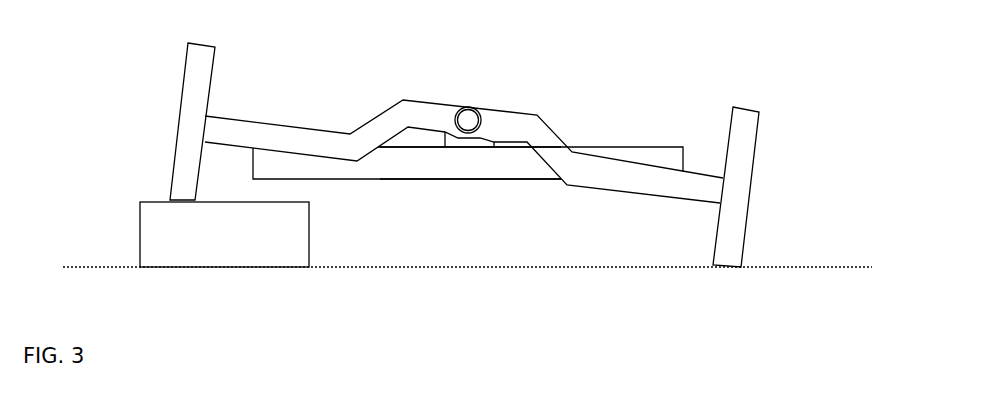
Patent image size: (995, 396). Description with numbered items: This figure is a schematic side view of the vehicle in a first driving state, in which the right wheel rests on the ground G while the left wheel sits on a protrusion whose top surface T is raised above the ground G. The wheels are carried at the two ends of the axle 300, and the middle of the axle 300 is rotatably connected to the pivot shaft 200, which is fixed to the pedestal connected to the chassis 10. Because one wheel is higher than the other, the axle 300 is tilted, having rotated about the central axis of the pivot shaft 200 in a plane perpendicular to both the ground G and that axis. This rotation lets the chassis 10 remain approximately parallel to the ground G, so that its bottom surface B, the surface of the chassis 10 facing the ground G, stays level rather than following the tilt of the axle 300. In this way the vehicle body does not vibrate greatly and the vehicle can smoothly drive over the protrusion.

The axle 300 is at (296, 140).
The pivot shaft 200 is at (468, 121).
The chassis 10 is at (527, 163).
The bottom surface of the chassis B is at (429, 182).
The top surface of the protrusion T is at (149, 198).
The ground G is at (348, 270).